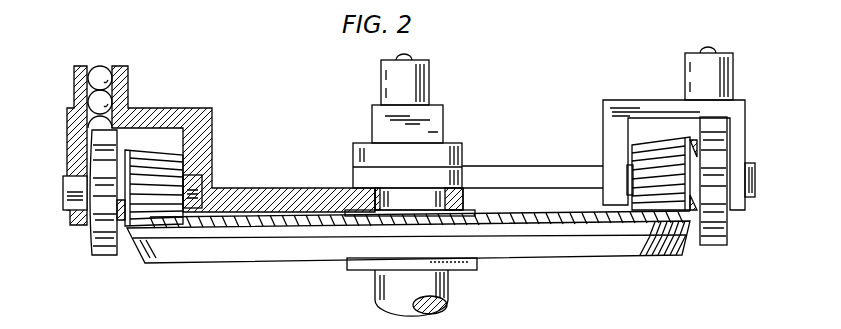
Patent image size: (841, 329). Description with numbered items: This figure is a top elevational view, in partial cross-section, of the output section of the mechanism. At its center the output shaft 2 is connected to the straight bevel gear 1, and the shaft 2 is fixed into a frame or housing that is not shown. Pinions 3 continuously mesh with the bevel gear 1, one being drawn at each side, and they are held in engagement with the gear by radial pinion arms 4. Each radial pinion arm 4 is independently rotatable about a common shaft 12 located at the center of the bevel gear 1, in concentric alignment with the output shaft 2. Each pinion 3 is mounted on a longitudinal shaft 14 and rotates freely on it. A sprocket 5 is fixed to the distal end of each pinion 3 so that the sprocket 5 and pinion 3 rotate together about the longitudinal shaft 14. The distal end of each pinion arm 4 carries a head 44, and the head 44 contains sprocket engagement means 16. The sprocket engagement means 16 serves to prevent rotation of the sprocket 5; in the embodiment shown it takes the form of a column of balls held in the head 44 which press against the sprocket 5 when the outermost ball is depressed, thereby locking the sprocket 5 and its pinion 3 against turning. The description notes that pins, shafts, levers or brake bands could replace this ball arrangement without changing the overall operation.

The straight bevel gear 1 is at (233, 250).
The output shaft 2 is at (411, 293).
The pinion 3 is at (140, 160).
The radial pinion arm 4 is at (214, 143).
The sprocket 5 is at (103, 258).
The common shaft 12 is at (419, 199).
The longitudinal shaft 14 is at (752, 202).
The sprocket engagement means 16 is at (95, 66).
The head 44 is at (130, 83).